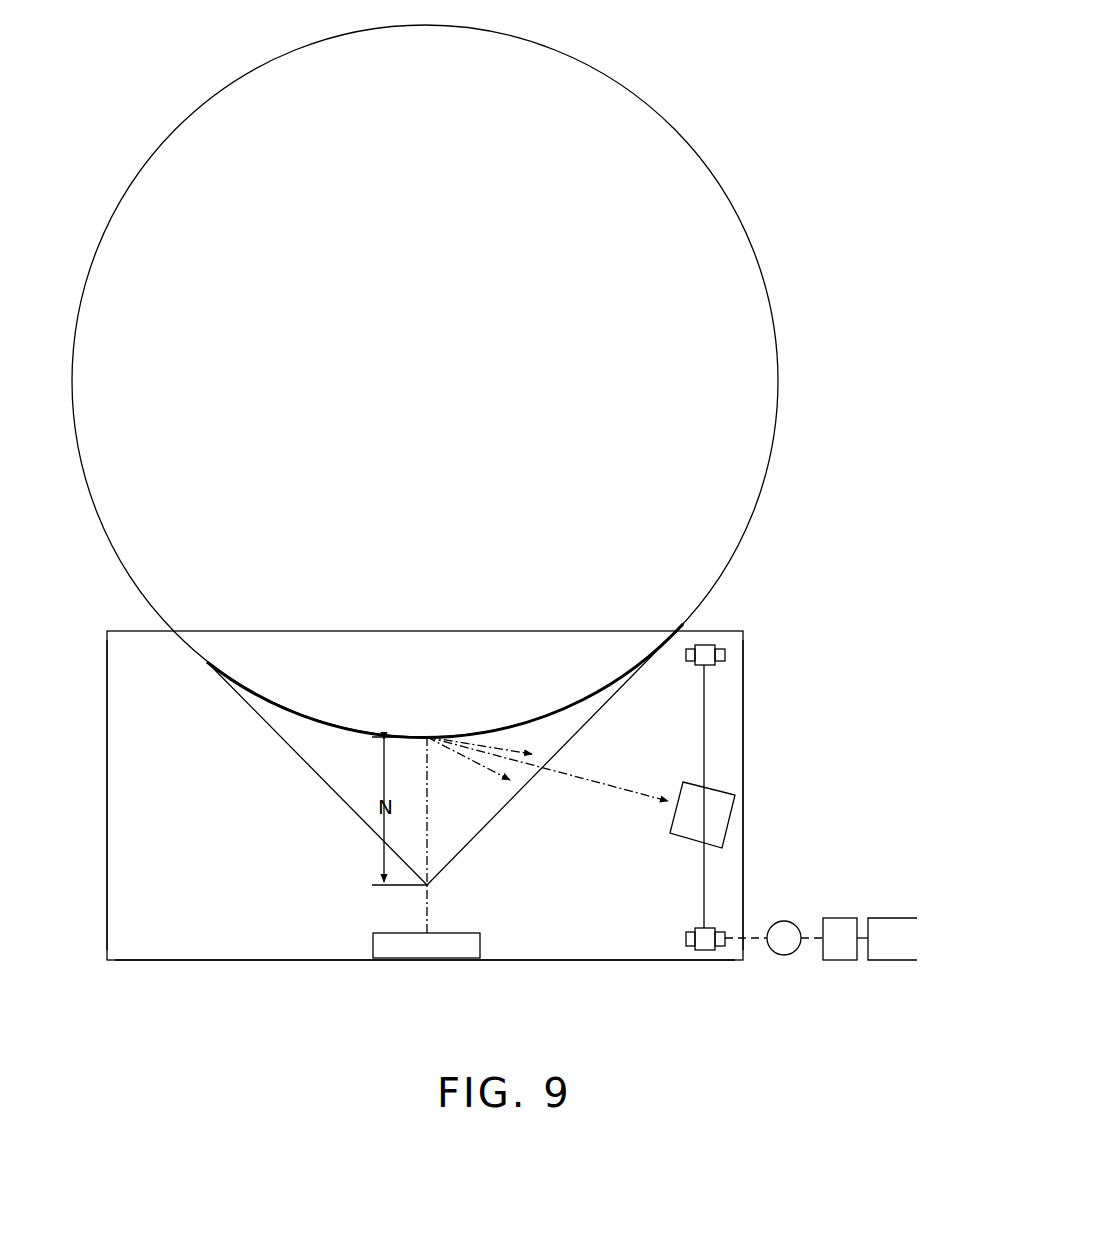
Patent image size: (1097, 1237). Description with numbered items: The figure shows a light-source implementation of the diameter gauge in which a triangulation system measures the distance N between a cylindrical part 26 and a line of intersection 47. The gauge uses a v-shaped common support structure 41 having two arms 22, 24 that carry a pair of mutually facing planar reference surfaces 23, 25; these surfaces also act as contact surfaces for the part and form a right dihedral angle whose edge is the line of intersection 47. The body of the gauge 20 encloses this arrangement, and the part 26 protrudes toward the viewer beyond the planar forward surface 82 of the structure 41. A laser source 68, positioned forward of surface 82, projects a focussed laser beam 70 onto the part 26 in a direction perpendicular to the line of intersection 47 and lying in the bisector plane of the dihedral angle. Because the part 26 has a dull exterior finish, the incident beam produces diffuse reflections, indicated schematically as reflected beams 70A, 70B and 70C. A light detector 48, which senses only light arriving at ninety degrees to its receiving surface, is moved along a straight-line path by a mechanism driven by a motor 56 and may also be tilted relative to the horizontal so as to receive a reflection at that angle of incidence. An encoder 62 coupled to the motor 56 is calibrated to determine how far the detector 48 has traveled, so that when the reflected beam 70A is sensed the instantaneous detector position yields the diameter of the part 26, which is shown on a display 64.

The gauge body 20 is at (107, 888).
The arm 22 is at (107, 692).
The planar reference surface 23 is at (308, 758).
The arm 24 is at (743, 690).
The planar reference surface 25 is at (597, 712).
The cylindrical part 26 is at (762, 485).
The v-shaped common support structure 41 is at (175, 960).
The line of intersection 47 is at (430, 888).
The light detector 48 is at (720, 790).
The motor 56 is at (787, 957).
The encoder 62 is at (838, 960).
The display 64 is at (898, 960).
The laser source 68 is at (373, 940).
The laser beam 70 is at (427, 911).
The reflected beam 70A is at (577, 780).
The reflected beam 70B is at (490, 773).
The reflected beam 70C is at (500, 748).
The planar forward surface 82 is at (150, 790).